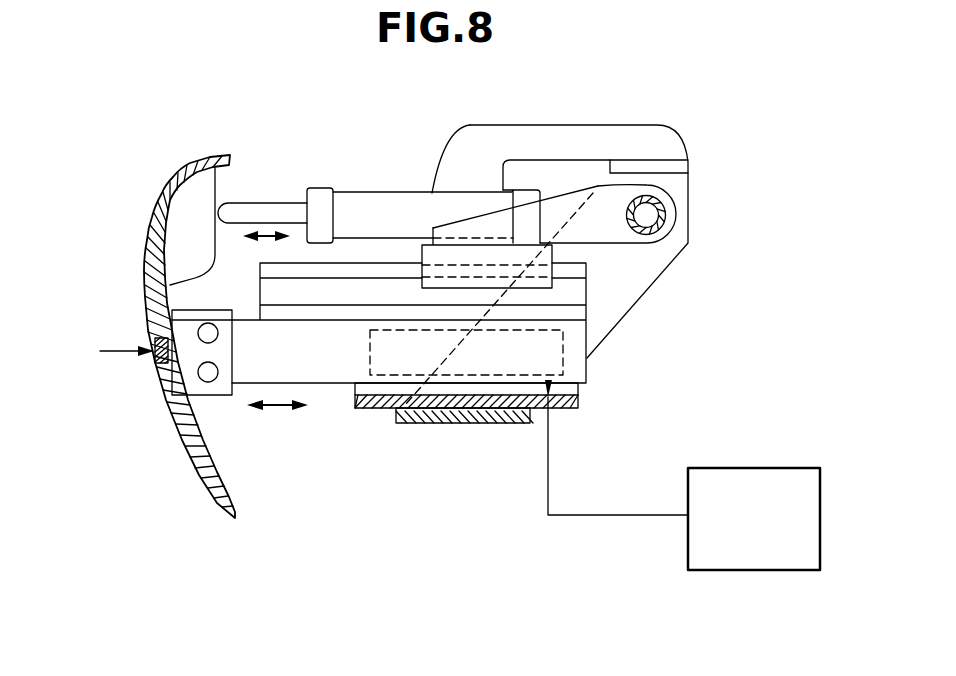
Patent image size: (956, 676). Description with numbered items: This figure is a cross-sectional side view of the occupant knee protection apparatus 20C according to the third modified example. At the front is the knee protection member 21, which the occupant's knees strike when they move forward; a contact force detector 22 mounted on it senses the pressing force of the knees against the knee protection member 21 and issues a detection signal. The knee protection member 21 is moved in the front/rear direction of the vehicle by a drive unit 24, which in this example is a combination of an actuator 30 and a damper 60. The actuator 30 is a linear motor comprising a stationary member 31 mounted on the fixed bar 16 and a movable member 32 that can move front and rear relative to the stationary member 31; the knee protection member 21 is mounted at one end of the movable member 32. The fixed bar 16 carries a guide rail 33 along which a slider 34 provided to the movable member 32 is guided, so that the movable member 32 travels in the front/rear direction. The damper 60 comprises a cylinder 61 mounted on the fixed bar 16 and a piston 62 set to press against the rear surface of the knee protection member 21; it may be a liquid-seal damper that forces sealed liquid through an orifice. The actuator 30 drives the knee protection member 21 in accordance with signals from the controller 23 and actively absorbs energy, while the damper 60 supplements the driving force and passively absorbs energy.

The occupant knee protection apparatus 20C is at (168, 135).
The knee protection member 21 is at (177, 415).
The contact force detector 22 is at (157, 362).
The controller 23 is at (758, 557).
The drive unit 24 is at (604, 355).
The fixed bar 16 is at (658, 187).
The actuator 30 is at (397, 467).
The stationary member 31 is at (397, 375).
The movable member 32 is at (325, 377).
The guide rail 33 is at (480, 253).
The slider 34 is at (395, 277).
The damper 60 is at (272, 92).
The cylinder 61 is at (382, 207).
The piston 62 is at (275, 213).